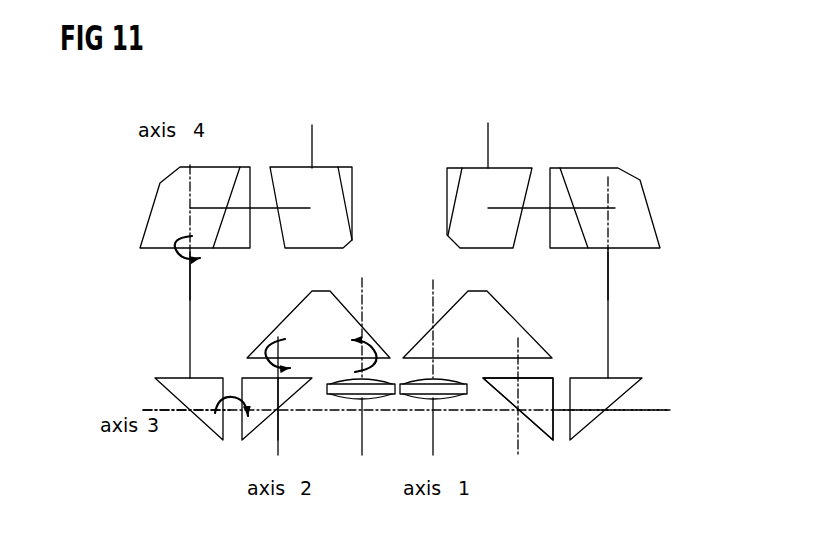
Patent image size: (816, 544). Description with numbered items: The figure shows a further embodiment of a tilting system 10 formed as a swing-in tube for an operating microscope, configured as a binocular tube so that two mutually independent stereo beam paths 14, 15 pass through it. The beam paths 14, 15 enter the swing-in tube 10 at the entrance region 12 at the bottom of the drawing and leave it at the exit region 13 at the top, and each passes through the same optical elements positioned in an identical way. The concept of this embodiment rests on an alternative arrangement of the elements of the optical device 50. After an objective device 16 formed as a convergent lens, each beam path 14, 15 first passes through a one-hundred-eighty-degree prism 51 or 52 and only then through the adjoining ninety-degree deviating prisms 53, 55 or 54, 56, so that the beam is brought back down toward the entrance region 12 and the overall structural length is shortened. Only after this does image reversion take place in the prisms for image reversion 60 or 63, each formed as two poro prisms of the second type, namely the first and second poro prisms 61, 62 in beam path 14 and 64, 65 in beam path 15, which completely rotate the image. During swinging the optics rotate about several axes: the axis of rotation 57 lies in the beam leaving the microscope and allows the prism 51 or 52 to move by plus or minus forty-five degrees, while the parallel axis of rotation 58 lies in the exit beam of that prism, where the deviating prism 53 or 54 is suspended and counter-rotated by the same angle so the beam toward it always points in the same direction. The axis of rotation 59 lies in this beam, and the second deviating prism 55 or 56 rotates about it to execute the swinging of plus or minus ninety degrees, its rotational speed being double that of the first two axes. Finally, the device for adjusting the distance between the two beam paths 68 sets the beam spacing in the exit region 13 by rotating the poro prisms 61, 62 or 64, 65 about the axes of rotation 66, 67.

The tilting system 10 is at (108, 122).
The entrance region 12 is at (468, 460).
The exit region 13 is at (308, 95).
The beam path 14 is at (312, 149).
The beam path 15 is at (488, 142).
The objective device 16 is at (398, 406).
The optical device 50 is at (138, 320).
The 180° prism 51 is at (297, 314).
The 180° prism 52 is at (500, 316).
The deviating prism 53 is at (285, 393).
The deviating prism 54 is at (547, 432).
The deviating prism 55 is at (176, 383).
The deviating prism 56 is at (577, 432).
The axis of rotation 57 is at (433, 306).
The axis of rotation 58 is at (277, 440).
The axis of rotation 59 is at (168, 411).
The prism for image reversion 60 is at (228, 130).
The first poro prism 61 is at (158, 217).
The second poro prism 62 is at (350, 184).
The prism for image reversion 63 is at (590, 147).
The first poro prism 64 is at (627, 182).
The second poro prism 65 is at (458, 163).
The axis of rotation 66 is at (188, 288).
The axis of rotation 67 is at (608, 275).
The device for adjusting the distance between two beam paths 68 is at (130, 182).